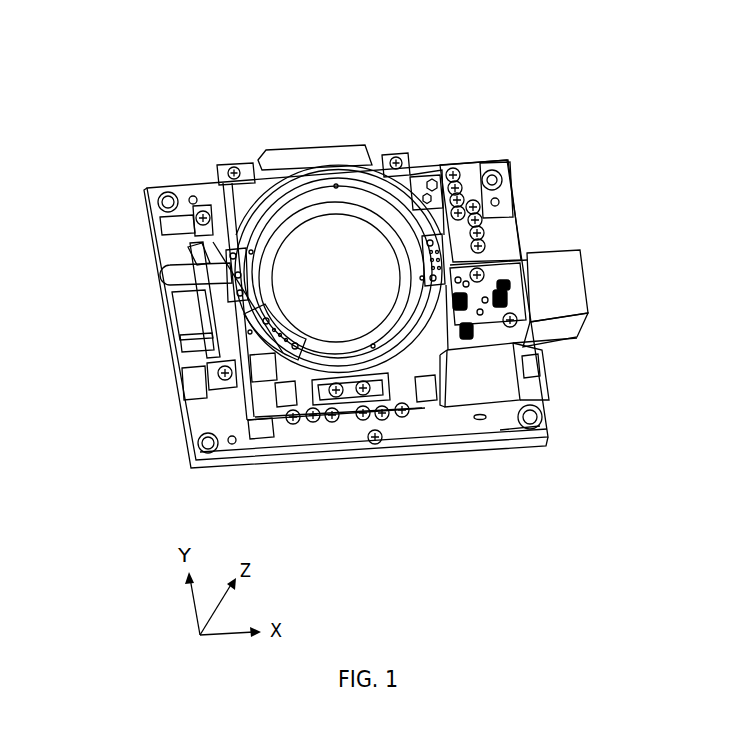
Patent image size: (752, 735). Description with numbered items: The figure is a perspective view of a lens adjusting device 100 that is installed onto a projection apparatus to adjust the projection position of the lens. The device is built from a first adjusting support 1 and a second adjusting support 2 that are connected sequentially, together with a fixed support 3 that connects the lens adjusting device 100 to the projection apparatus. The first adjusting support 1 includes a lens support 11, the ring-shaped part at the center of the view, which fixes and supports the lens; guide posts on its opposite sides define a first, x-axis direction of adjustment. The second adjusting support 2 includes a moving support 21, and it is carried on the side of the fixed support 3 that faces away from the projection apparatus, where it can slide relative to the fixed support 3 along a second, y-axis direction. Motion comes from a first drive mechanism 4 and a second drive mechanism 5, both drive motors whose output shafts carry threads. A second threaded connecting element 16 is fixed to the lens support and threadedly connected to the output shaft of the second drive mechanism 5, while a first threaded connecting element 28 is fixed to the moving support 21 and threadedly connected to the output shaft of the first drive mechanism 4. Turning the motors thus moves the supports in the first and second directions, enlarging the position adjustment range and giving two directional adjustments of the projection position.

The lens adjusting device 100 is at (359, 37).
The first adjusting support 1 is at (247, 238).
The second adjusting support 2 is at (245, 411).
The fixed support 3 is at (169, 318).
The first drive mechanism 4 is at (560, 277).
The second drive mechanism 5 is at (500, 388).
The lens support 11 is at (507, 166).
The second threaded connecting element 16 is at (497, 270).
The moving support 21 is at (428, 405).
The first threaded connecting element 28 is at (473, 343).